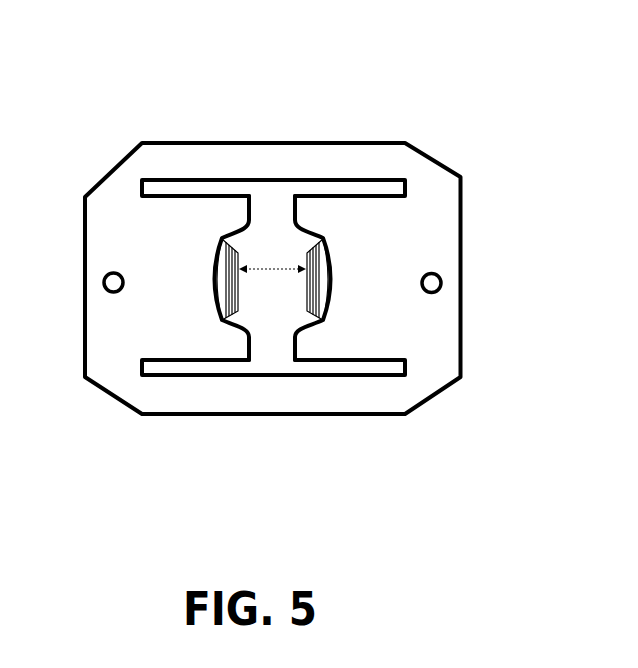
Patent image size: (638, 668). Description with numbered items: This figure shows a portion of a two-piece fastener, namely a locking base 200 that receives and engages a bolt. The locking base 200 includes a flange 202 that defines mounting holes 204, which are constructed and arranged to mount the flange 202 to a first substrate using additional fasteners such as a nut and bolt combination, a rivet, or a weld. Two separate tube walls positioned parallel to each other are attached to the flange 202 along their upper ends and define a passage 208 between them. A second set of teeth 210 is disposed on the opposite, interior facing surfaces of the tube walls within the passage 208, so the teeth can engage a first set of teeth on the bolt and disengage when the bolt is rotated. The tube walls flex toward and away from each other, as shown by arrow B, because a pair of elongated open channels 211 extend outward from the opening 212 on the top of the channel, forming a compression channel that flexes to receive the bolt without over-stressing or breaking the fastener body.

The locking base 200 is at (422, 130).
The flange 202 is at (147, 160).
The mounting holes 204 is at (445, 278).
The passage 208 is at (253, 240).
The second set of teeth 210 is at (331, 323).
The elongated open channels 211 is at (287, 180).
The opening 212 is at (318, 226).